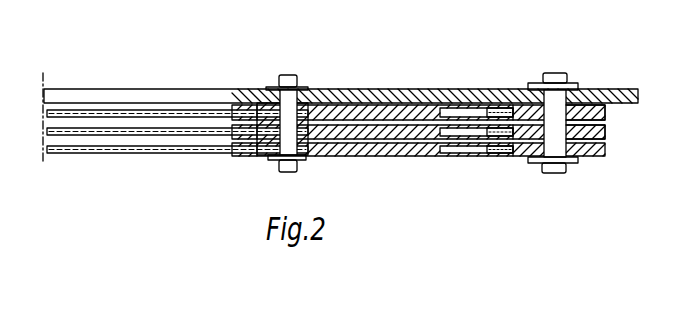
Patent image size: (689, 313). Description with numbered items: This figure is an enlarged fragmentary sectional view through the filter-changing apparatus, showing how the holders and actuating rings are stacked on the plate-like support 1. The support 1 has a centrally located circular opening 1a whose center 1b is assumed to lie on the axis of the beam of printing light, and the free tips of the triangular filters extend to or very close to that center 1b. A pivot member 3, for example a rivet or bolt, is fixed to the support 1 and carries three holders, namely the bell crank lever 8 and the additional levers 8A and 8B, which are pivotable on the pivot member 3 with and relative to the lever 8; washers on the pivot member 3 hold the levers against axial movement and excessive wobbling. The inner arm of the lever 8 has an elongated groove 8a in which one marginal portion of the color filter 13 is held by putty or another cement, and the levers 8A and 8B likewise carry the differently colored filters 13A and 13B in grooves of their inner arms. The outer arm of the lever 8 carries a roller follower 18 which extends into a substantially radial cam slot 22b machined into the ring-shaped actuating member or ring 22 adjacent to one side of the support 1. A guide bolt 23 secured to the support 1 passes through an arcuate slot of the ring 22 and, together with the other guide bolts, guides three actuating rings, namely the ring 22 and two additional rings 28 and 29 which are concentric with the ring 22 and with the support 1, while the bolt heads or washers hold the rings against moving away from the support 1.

The support 1 is at (250, 93).
The opening 1a is at (230, 95).
The center 1b is at (44, 85).
The pivot member 3 is at (288, 84).
The bell crank lever 8 is at (333, 147).
The lever 8A is at (367, 128).
The lever 8B is at (405, 107).
The groove 8a is at (252, 157).
The color filter 13 is at (118, 150).
The filter 13A is at (68, 134).
The filter 13B is at (95, 117).
The roller follower 18 is at (453, 153).
The ring 22 is at (522, 154).
The cam slot 22b is at (503, 156).
The guide bolt 23 is at (555, 150).
The ring 28 is at (596, 132).
The ring 29 is at (592, 110).